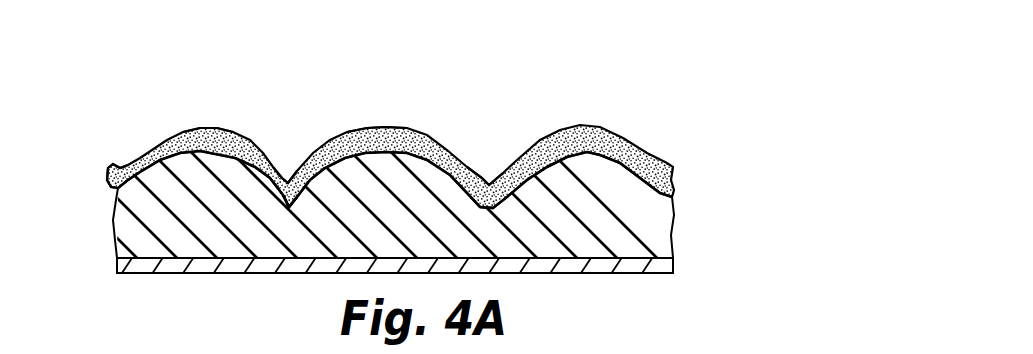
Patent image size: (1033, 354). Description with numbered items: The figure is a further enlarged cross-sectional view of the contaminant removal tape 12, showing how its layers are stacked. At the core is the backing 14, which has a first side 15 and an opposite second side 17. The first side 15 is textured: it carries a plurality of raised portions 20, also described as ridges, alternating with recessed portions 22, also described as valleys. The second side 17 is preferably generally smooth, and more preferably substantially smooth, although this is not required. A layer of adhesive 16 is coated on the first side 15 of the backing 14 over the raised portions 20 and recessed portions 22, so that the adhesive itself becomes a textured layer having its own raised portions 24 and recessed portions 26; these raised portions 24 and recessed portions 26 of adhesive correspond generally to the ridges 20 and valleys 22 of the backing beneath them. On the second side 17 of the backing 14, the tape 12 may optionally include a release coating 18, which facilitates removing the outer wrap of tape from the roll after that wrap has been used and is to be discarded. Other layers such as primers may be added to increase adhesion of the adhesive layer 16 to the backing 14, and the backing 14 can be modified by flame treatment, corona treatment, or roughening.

The contaminant removal tape 12 is at (367, 199).
The backing 14 is at (122, 218).
The first side 15 is at (168, 170).
The layer of adhesive 16 is at (110, 170).
The second side 17 is at (282, 260).
The release coating 18 is at (182, 263).
The raised portions 20 is at (210, 157).
The recessed portions 22 is at (289, 184).
The raised portions of adhesive 24 is at (222, 132).
The recessed portions of adhesive 26 is at (285, 182).